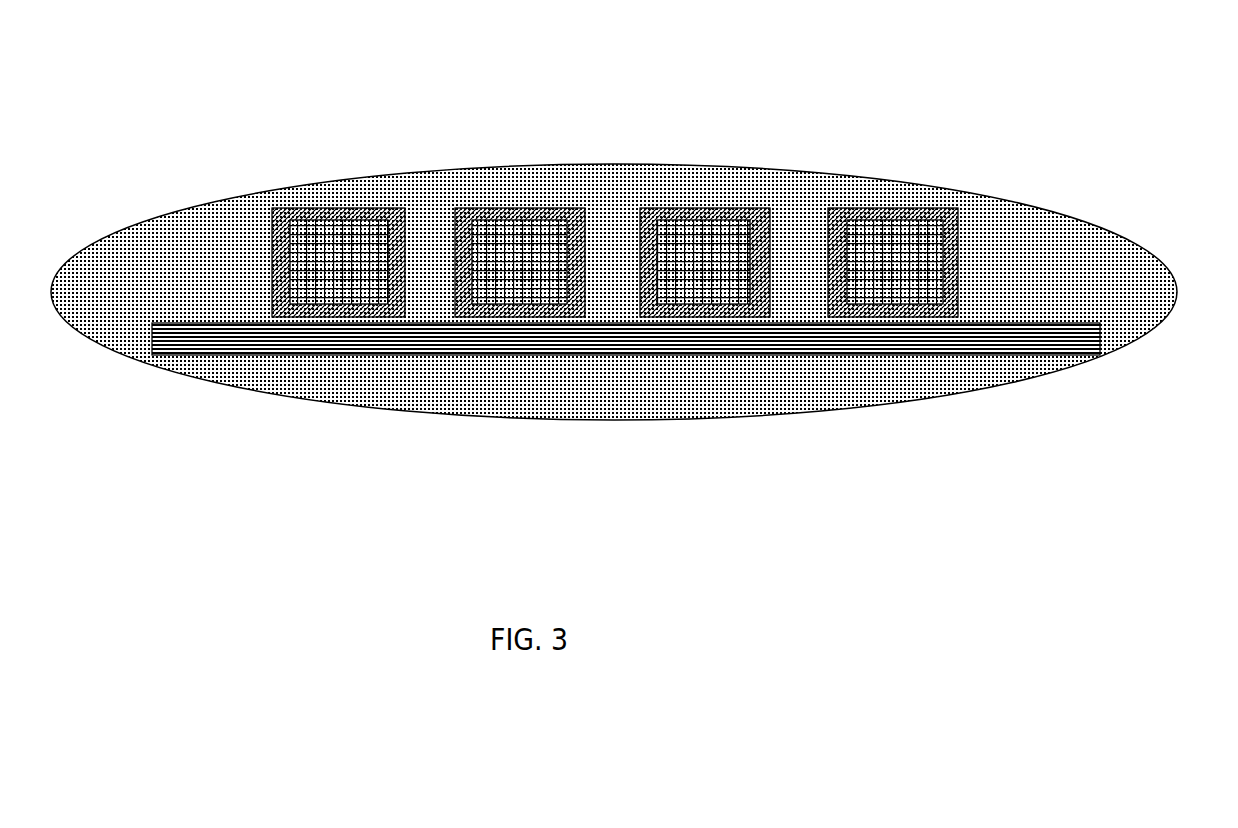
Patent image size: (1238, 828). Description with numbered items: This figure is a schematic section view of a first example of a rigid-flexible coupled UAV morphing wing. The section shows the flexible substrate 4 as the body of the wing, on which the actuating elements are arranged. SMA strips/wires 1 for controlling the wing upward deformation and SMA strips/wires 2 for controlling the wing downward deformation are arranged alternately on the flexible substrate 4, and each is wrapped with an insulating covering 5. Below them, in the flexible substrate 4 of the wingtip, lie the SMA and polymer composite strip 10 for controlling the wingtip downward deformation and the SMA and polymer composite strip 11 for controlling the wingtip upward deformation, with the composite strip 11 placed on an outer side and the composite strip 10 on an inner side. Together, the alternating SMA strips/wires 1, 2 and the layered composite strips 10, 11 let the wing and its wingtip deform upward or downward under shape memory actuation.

The SMA strip/wire for controlling the wing upward deformation 1 is at (680, 247).
The SMA strip/wire for controlling the wing downward deformation 2 is at (550, 245).
The flexible substrate 4 is at (1033, 253).
The insulating covering 5 is at (287, 233).
The SMA and polymer composite strip for controlling the wingtip downward deformation 10 is at (669, 376).
The SMA and polymer composite strip for controlling the wingtip upward deformation 11 is at (1020, 347).